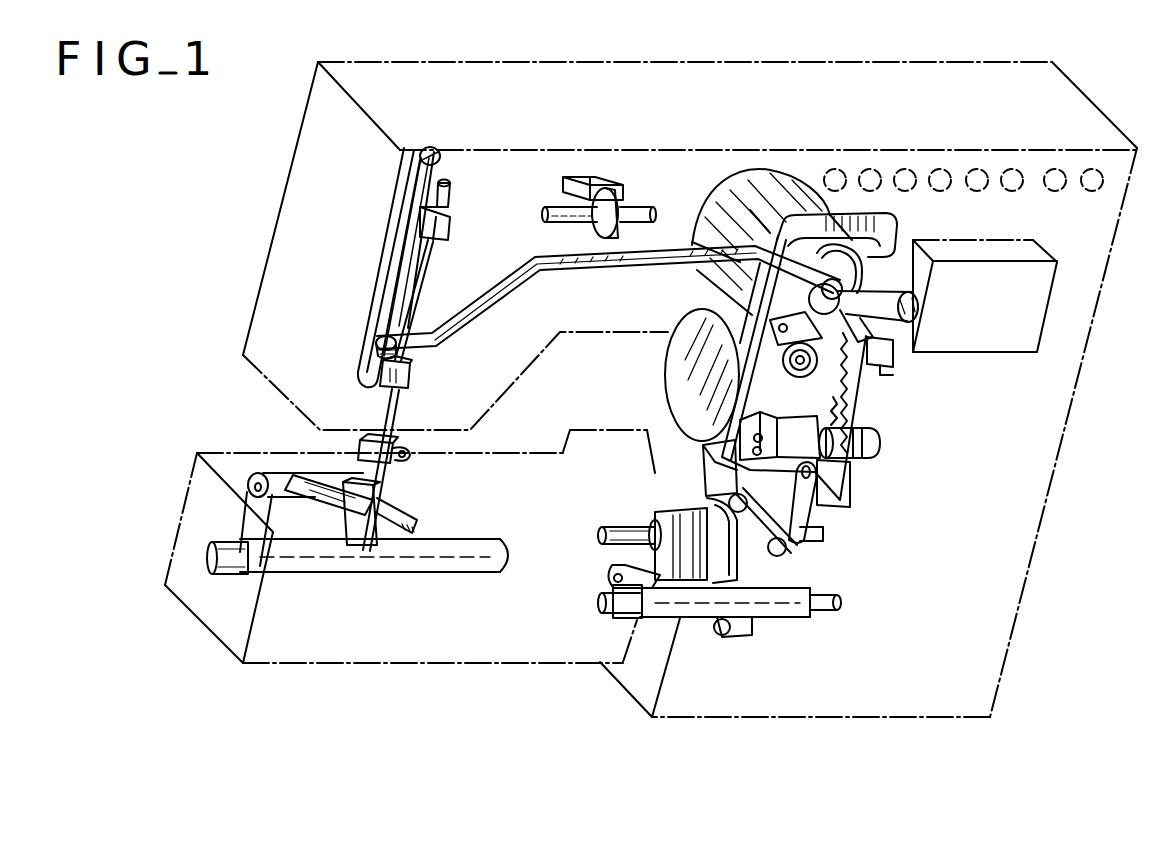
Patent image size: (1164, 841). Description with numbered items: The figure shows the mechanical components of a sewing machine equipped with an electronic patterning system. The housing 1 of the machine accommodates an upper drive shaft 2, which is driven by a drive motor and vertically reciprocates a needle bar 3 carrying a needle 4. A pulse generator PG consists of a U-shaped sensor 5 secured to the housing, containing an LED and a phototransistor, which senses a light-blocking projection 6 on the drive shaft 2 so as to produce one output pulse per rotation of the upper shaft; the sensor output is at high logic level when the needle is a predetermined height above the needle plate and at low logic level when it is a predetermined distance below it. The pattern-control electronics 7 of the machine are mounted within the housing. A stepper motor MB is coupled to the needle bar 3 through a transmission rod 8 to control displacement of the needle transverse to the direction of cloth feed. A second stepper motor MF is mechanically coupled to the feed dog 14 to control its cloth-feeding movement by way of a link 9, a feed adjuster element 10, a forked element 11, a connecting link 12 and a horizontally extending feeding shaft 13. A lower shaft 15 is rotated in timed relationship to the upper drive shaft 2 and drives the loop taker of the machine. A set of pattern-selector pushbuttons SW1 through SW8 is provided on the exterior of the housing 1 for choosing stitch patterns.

The housing 1 is at (565, 72).
The upper drive shaft 2 is at (548, 214).
The needle bar 3 is at (418, 262).
The needle 4 is at (380, 470).
The U-shaped sensor 5 is at (580, 180).
The light-blocking projection 6 is at (606, 237).
The pattern-control electronics 7 is at (998, 350).
The transmission rod 8 is at (632, 262).
The link 9 is at (815, 518).
The feed adjuster element 10 is at (742, 562).
The forked element 11 is at (640, 562).
The connecting link 12 is at (722, 632).
The feeding shaft 13 is at (485, 572).
The feed dog 14 is at (350, 525).
The lower shaft 15 is at (612, 525).
The pulse generator PG is at (627, 195).
The stepper motor MB is at (718, 205).
The stepper motor MF is at (665, 378).
The pattern-selector pushbuttons SW1 is at (1090, 190).